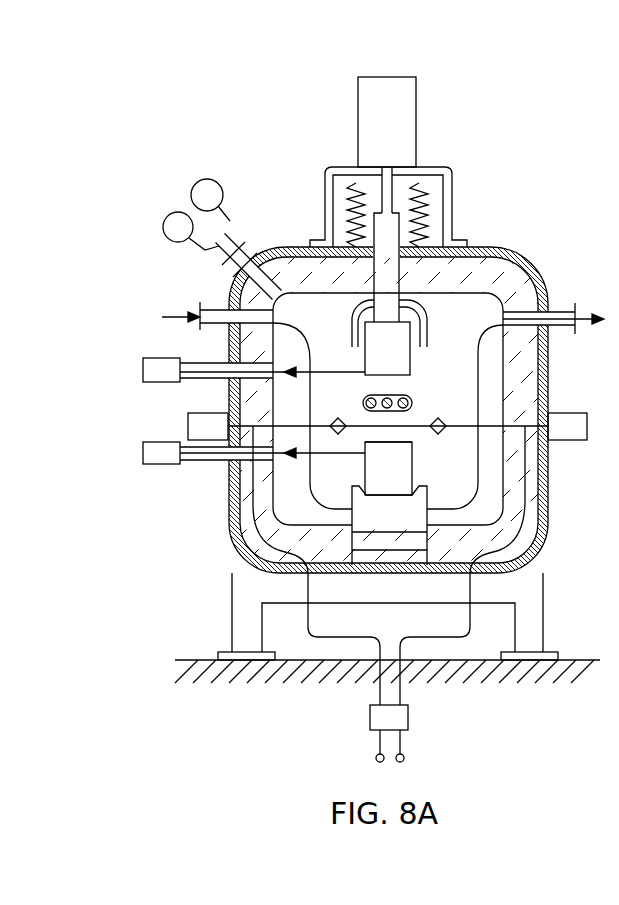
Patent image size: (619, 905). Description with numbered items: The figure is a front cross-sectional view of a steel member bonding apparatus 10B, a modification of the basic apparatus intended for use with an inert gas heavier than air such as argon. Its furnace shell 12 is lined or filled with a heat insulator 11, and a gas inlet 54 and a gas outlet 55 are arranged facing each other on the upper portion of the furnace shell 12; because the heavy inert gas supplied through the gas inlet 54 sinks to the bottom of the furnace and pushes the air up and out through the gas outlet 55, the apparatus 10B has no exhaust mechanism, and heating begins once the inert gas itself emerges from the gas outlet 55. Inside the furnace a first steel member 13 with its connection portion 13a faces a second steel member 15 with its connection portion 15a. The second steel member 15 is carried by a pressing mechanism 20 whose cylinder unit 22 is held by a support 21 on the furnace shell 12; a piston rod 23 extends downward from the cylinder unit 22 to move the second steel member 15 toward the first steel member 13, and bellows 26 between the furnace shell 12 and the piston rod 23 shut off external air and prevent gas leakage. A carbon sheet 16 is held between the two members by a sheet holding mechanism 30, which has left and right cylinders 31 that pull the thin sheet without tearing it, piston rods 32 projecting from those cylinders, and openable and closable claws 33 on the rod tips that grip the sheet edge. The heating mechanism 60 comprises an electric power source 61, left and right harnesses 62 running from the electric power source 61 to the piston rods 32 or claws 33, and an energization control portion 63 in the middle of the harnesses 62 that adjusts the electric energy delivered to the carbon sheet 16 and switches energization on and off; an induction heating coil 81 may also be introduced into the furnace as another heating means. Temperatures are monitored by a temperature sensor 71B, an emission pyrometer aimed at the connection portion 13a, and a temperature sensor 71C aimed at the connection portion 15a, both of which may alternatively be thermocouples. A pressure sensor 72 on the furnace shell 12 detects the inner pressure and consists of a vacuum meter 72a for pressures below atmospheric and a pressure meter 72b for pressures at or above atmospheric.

The steel member bonding apparatus 10B is at (238, 129).
The pressing mechanism 20 is at (387, 199).
The cylinder unit 22 is at (380, 137).
The support 21 is at (455, 212).
The piston rod 23 is at (386, 193).
The bellows 26 is at (357, 223).
The pressure sensor 72 is at (194, 218).
The vacuum meter 72a is at (205, 181).
The pressure meter 72b is at (181, 193).
The gas inlet 54 is at (217, 307).
The furnace shell 12 is at (233, 283).
The gas outlet 55 is at (563, 310).
The temperature sensor 71C is at (143, 370).
The temperature sensor 71B is at (143, 453).
The heat insulator 11 is at (231, 392).
The sheet holding mechanism 30 is at (184, 433).
The cylinder 31 is at (187, 422).
The piston rod 32 is at (309, 425).
The openable and closable claw 33 is at (342, 411).
The second steel member 15 is at (366, 356).
The induction heating coil 81 is at (372, 397).
The connection portion 15a is at (418, 370).
The carbon sheet 16 is at (348, 430).
The connection portion 13a is at (405, 452).
The first steel member 13 is at (412, 503).
The harness 62 is at (347, 632).
The heating mechanism 60 is at (387, 670).
The energization control portion 63 is at (376, 718).
The electric power source 61 is at (375, 758).